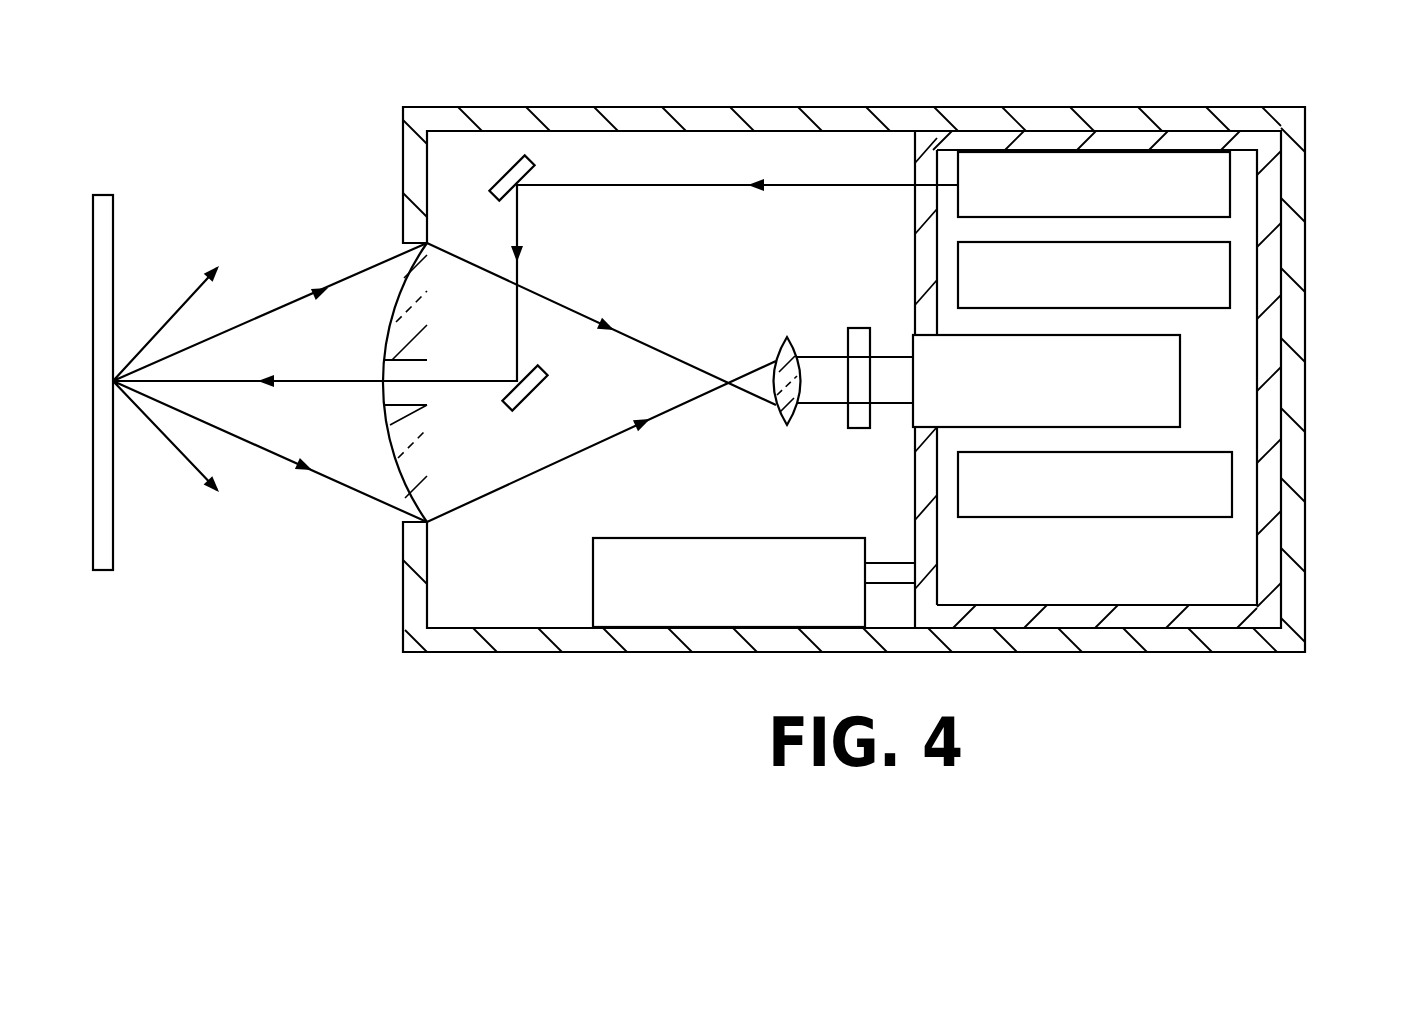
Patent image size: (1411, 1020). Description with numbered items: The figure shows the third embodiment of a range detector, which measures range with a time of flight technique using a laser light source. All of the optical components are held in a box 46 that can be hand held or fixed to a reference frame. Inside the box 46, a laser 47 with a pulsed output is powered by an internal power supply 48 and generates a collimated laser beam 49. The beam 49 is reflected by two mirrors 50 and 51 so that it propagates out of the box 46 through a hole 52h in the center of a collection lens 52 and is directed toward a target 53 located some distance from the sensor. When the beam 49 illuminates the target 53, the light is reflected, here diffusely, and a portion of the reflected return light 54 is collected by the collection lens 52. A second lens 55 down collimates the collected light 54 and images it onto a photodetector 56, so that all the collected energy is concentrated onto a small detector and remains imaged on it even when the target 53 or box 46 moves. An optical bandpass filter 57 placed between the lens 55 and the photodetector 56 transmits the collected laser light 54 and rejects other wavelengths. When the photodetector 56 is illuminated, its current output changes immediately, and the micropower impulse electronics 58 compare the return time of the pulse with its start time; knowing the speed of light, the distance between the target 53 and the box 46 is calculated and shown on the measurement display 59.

The box 46 is at (800, 107).
The laser 47 is at (1230, 192).
The power supply 48 is at (697, 538).
The collimated laser beam 49 is at (347, 337).
The mirror 50 is at (505, 155).
The mirror 51 is at (527, 410).
The collection lens 52 is at (400, 282).
The hole 52h is at (397, 393).
The target 53 is at (113, 225).
The reflected return light 54 is at (672, 407).
The second lens 55 is at (786, 340).
The photodetector 56 is at (1180, 378).
The optical bandpass filter 57 is at (858, 328).
The micropower impulse electronics 58 is at (1230, 275).
The measurement display 59 is at (1232, 485).